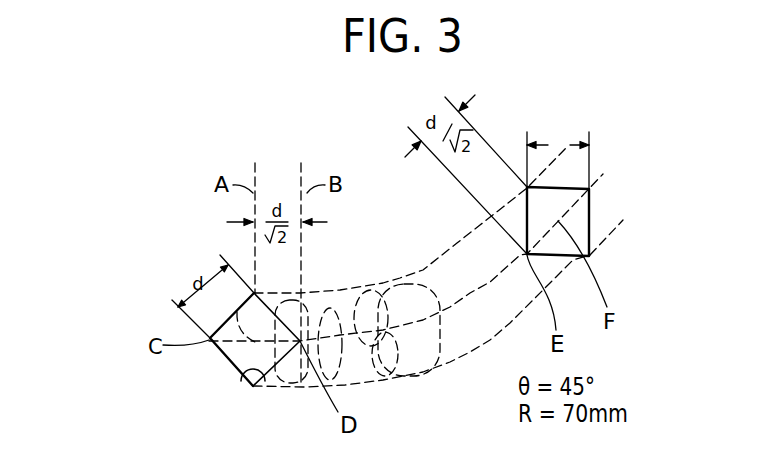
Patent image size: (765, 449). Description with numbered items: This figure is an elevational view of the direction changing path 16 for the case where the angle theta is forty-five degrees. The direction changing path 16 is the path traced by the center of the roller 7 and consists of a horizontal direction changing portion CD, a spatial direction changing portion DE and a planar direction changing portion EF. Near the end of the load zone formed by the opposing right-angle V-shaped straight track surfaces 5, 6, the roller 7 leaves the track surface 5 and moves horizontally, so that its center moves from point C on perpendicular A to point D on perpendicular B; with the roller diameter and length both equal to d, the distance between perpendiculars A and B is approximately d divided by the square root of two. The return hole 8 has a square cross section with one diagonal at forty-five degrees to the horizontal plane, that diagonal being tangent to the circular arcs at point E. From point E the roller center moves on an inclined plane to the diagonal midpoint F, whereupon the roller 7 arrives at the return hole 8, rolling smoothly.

The straight track surface 5 is at (221, 355).
The straight track surface 6 is at (243, 376).
The roller 7 is at (255, 370).
The return hole 8 is at (590, 228).
The direction changing path 16 is at (473, 338).